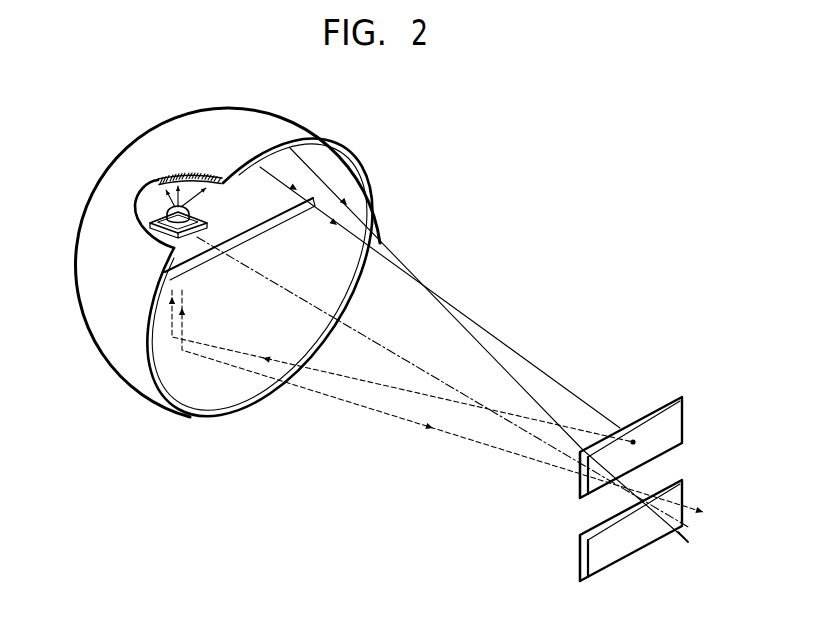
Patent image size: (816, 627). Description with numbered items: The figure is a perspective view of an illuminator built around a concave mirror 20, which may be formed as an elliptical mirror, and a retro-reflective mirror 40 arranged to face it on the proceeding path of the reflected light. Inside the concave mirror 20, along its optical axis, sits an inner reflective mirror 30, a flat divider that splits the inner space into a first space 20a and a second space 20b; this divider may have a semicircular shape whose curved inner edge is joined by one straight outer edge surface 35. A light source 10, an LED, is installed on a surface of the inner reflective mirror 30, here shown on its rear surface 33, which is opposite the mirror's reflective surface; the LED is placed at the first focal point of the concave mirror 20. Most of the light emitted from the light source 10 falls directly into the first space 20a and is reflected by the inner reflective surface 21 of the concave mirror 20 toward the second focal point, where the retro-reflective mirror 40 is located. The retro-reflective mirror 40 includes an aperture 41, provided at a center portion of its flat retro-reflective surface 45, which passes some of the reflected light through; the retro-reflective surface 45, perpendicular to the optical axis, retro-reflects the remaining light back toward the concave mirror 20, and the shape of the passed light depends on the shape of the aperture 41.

The light source 10 is at (150, 234).
The concave mirror 20 is at (309, 114).
The first space 20a is at (266, 219).
The second space 20b is at (228, 393).
The inner reflective surface 21 is at (348, 180).
The inner reflective mirror 30 is at (248, 271).
The rear surface 33 is at (279, 207).
The outer edge surface 35 is at (274, 227).
The retro-reflective mirror 40 is at (625, 455).
The aperture 41 is at (584, 518).
The retro-reflective surface 45 is at (577, 486).